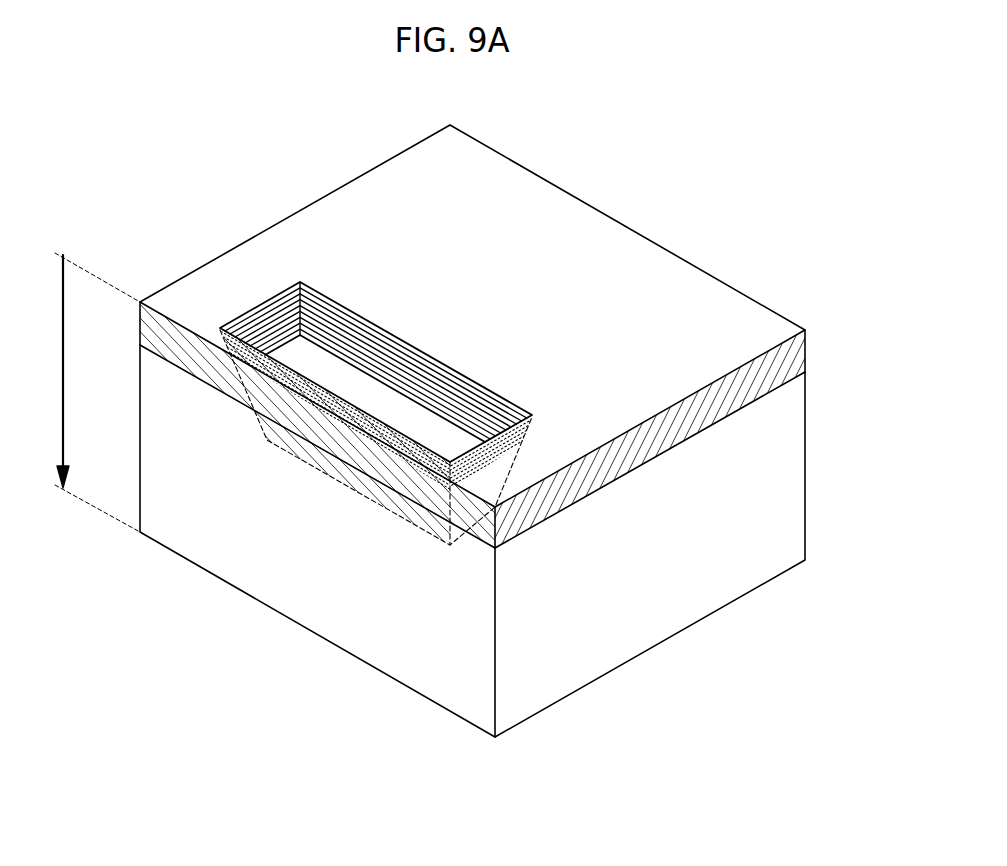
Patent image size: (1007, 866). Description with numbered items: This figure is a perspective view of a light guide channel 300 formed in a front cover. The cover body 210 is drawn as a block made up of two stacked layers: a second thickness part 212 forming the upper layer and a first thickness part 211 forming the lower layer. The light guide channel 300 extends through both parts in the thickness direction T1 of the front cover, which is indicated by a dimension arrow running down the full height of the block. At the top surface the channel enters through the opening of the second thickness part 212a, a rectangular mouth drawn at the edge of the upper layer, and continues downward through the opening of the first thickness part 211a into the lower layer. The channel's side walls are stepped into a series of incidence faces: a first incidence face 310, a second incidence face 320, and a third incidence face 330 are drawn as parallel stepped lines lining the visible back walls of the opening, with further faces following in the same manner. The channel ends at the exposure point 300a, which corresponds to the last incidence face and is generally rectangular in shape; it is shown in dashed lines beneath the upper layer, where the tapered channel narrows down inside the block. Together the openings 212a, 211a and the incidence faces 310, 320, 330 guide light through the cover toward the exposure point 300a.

The substrate body 210 is at (469, 479).
The first thickness part 211 is at (792, 452).
The second thickness part 212 is at (792, 355).
The opening of the first thickness part 211a is at (503, 485).
The opening of the second thickness part 212a is at (533, 418).
The light guide channel 300 is at (447, 345).
The exposure point 300a is at (413, 523).
The first incidence face 310 is at (333, 300).
The second incidence face 320 is at (358, 317).
The third incidence face 330 is at (393, 345).
The thickness direction T1 is at (84, 392).